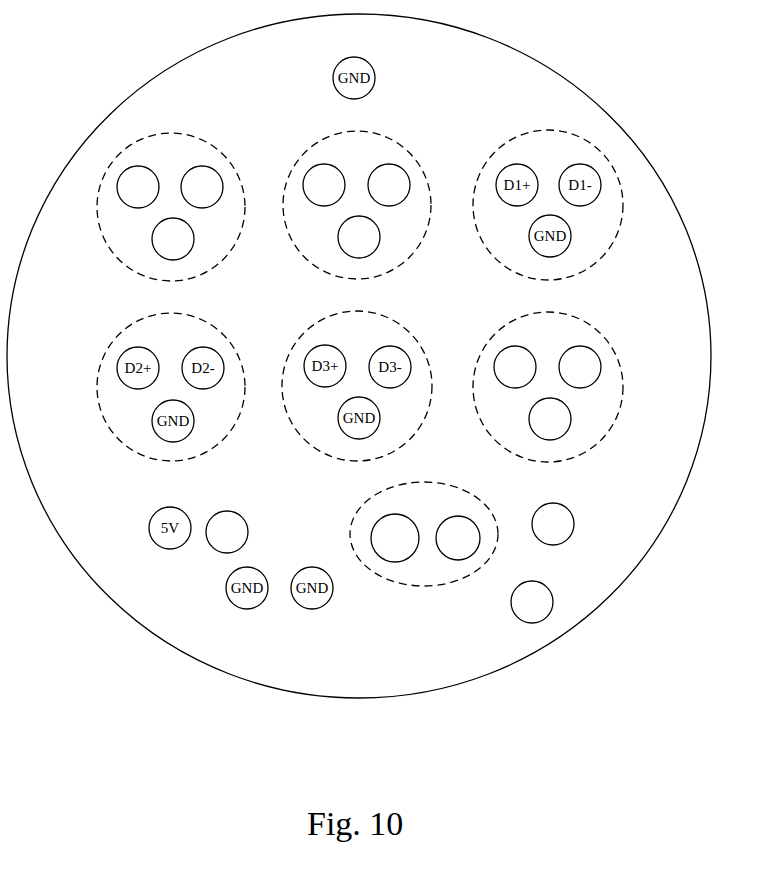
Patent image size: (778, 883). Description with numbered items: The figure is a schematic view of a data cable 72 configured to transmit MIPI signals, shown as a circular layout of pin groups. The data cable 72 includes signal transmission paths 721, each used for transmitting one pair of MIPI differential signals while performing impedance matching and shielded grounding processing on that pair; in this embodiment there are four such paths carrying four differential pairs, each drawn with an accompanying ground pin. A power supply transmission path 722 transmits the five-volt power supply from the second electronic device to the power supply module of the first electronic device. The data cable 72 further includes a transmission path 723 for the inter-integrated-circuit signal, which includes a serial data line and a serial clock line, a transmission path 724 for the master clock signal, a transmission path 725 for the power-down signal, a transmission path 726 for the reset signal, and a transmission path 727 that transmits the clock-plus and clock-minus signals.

The data cable 72 is at (628, 132).
The signal transmission path 721 is at (372, 140).
The power supply transmission path 722 is at (221, 520).
The transmission path for transmitting the I2C signal 723 is at (583, 332).
The transmission path for transmitting the MCLK signal 724 is at (443, 502).
The transmission path for transmitting the PDN signal 725 is at (540, 588).
The transmission path for transmitting the RST signal 726 is at (562, 513).
The transmission path for transmitting a clock signal 727 is at (200, 147).